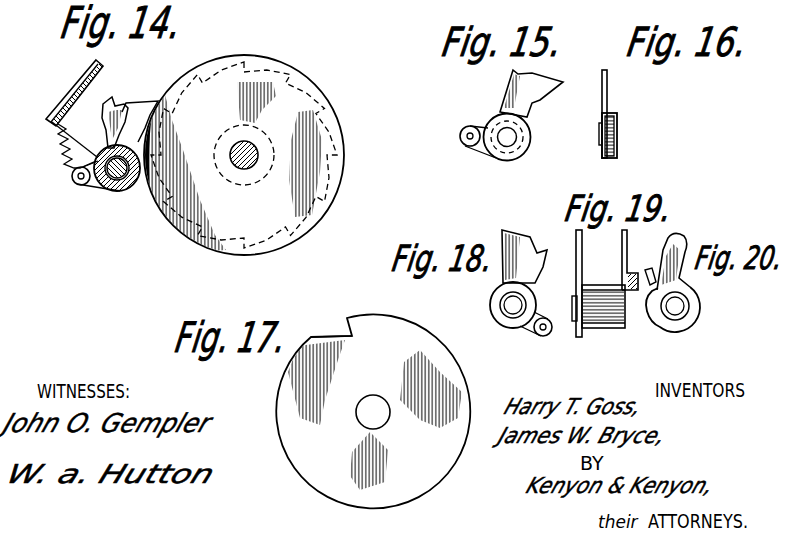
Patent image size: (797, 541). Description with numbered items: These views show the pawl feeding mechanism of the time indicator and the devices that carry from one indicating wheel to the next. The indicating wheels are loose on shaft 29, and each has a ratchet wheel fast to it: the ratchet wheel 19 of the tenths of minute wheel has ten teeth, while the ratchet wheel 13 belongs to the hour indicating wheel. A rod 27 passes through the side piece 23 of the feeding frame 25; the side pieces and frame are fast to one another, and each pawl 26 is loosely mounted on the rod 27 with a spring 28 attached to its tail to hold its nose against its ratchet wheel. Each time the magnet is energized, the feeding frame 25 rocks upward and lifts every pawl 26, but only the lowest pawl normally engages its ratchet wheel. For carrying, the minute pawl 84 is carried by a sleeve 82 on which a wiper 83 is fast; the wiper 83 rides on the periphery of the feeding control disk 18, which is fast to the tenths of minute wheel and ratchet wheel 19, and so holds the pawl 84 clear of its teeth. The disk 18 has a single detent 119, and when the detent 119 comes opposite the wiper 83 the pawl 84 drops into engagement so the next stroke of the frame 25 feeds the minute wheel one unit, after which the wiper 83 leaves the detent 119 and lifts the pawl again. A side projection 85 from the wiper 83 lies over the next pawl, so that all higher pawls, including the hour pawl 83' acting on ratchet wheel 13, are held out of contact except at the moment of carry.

In FIG. 14, the ratchet wheel 13 is at (334, 145).
In FIG. 17, the feeding control disk 18 is at (453, 370).
In FIG. 14, the ratchet wheel 19 is at (318, 105).
In FIG. 14, the side piece 23 is at (103, 104).
In FIG. 14, the feeding frame 25 is at (73, 88).
In FIG. 15, the pawl 26 is at (533, 103).
In FIG. 16, the pawl 26 is at (607, 92).
In FIG. 14, the rod 27 is at (118, 192).
In FIG. 14, the spring 28 is at (72, 153).
In FIG. 14, the shaft 29 is at (244, 169).
In FIG. 19, the sleeve 82 is at (602, 318).
In FIG. 18, the wiper 83 is at (499, 283).
In FIG. 19, the wiper 83 is at (640, 258).
In FIG. 20, the wiper 83 is at (686, 269).
In FIG. 14, the pawl 83' is at (146, 98).
In FIG. 19, the pawl 84 is at (581, 240).
In FIG. 20, the side projection 85 is at (692, 322).
In FIG. 17, the detent 119 is at (333, 333).